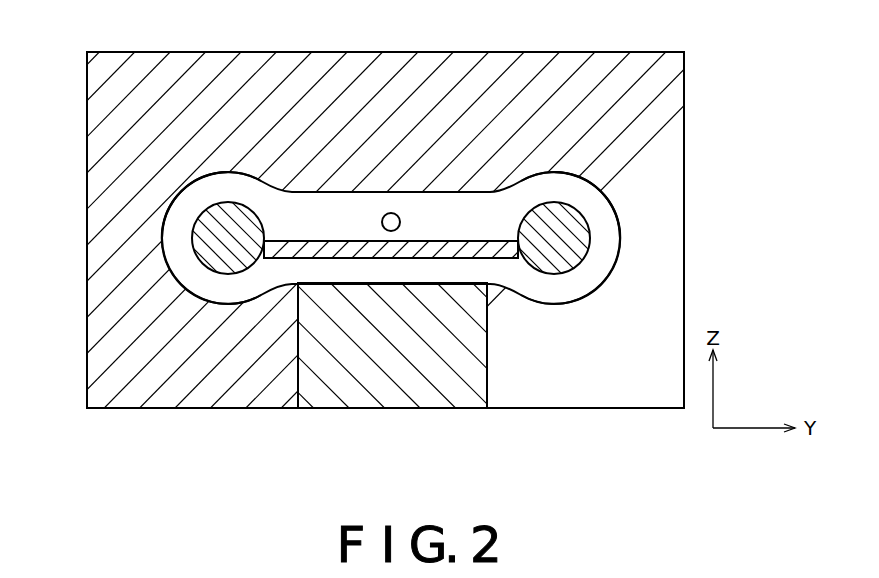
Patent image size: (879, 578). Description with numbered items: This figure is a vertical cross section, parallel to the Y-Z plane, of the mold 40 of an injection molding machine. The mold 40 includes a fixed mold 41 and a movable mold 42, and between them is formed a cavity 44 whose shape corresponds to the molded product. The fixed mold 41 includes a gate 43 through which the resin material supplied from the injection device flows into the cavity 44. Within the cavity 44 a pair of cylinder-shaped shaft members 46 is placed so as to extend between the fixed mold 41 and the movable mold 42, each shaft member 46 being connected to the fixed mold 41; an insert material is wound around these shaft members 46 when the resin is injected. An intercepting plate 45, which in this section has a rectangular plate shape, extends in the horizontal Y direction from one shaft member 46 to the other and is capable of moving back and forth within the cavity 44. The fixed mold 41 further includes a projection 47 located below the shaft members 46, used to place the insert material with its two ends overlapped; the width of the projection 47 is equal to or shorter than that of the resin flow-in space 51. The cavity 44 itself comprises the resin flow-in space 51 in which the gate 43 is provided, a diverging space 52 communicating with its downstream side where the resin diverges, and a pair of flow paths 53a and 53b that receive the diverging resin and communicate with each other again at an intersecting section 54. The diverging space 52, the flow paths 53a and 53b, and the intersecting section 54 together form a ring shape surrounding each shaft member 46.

The mold 40 is at (697, 84).
The fixed mold 41 is at (364, 409).
The movable mold 42 is at (157, 409).
The gate 43 is at (391, 211).
The cavity 44 is at (435, 207).
The intercepting plate 45 is at (425, 250).
The shaft members 46 is at (213, 223).
The projection 47 is at (421, 390).
The resin flow-in space 51 is at (353, 222).
The diverging space 52 is at (267, 238).
The flow path 53a is at (230, 193).
The flow path 53b is at (223, 285).
The intersecting section 54 is at (178, 241).